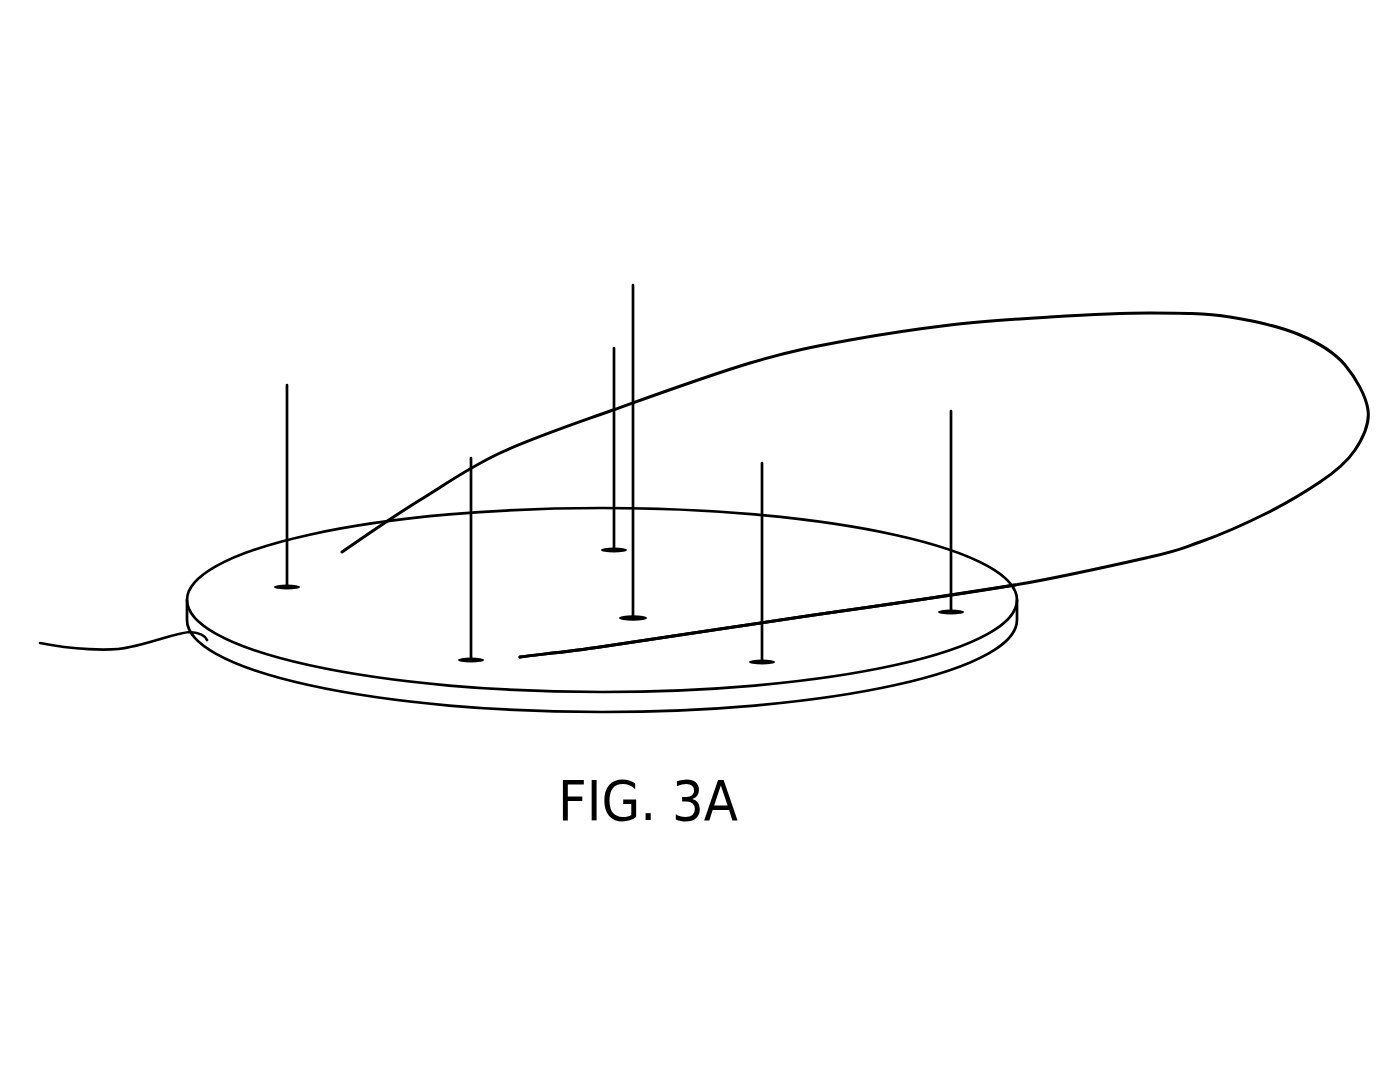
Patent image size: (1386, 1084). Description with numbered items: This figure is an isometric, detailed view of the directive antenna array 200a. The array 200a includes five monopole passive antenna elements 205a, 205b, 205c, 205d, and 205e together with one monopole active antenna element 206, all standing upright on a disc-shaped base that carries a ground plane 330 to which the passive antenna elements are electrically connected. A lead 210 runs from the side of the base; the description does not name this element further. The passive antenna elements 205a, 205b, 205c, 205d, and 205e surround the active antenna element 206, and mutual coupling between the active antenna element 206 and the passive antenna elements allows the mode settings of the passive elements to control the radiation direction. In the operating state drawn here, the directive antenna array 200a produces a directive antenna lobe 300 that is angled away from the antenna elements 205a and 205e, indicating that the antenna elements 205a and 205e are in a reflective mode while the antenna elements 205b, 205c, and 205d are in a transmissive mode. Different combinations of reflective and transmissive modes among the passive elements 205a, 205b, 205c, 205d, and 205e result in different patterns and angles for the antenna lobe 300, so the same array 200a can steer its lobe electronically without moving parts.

The directive antenna array 200a is at (312, 267).
The monopole passive antenna element 205a is at (286, 420).
The monopole passive antenna element 205b is at (613, 383).
The monopole passive antenna element 205c is at (950, 432).
The monopole passive antenna element 205d is at (763, 542).
The monopole passive antenna element 205e is at (471, 573).
The monopole active antenna element 206 is at (634, 318).
The lead wire 210 is at (83, 644).
The directive antenna lobe 300 is at (1155, 313).
The ground plane 330 is at (852, 660).